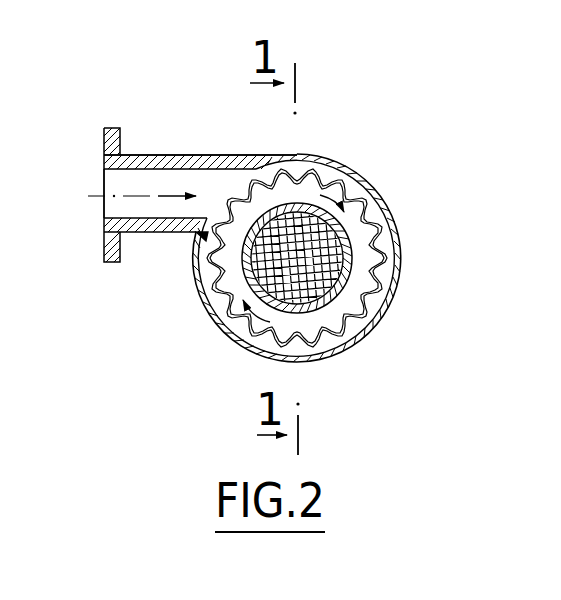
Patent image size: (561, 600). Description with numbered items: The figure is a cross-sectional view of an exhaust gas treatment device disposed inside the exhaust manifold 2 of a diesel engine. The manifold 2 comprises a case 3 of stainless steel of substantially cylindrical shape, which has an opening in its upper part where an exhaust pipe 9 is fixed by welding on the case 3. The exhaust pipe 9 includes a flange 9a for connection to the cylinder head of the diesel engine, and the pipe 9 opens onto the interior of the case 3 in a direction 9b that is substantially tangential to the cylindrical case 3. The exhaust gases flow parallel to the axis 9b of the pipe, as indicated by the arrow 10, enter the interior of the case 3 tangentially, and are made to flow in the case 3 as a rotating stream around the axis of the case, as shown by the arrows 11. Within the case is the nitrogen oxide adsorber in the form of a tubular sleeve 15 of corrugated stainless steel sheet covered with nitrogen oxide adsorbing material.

The exhaust manifold 2 is at (411, 211).
The case 3 is at (391, 304).
The exhaust pipe 9 is at (160, 244).
The flange 9a is at (110, 264).
The direction 9b is at (148, 192).
The arrow 10 is at (177, 193).
The arrows 11 is at (366, 189).
The tubular sleeve 15 is at (348, 331).